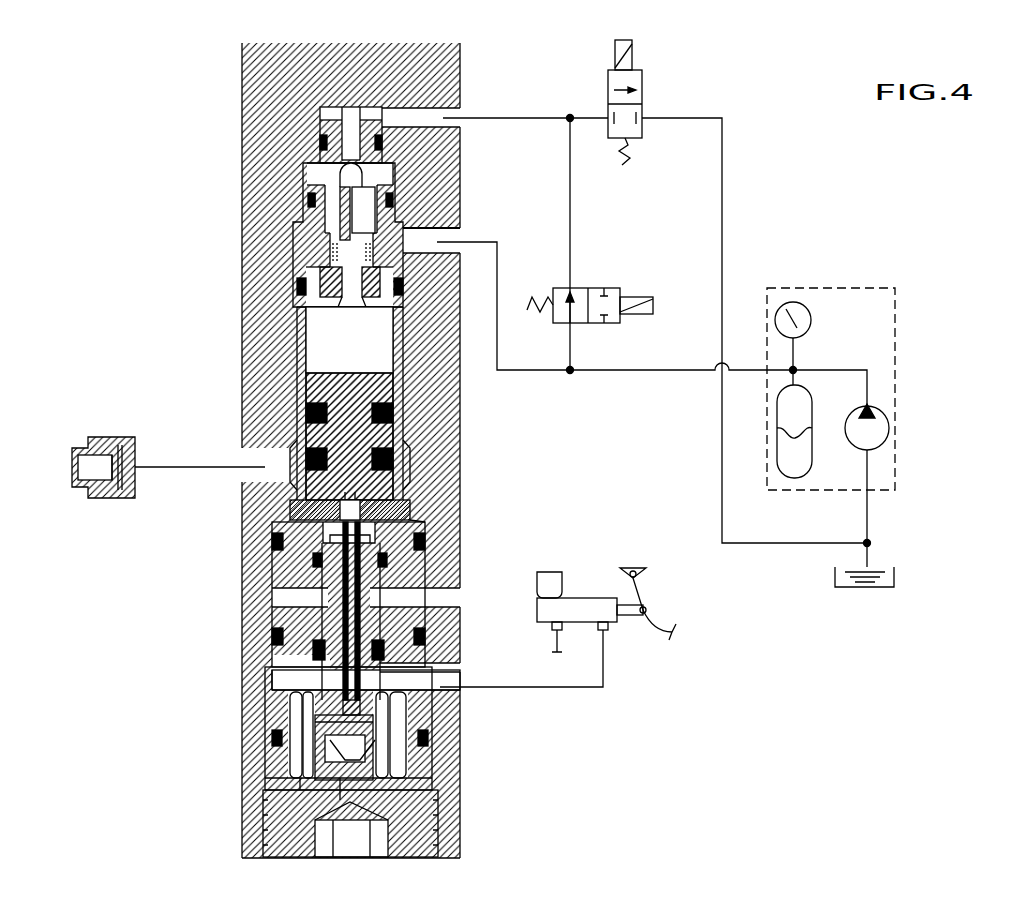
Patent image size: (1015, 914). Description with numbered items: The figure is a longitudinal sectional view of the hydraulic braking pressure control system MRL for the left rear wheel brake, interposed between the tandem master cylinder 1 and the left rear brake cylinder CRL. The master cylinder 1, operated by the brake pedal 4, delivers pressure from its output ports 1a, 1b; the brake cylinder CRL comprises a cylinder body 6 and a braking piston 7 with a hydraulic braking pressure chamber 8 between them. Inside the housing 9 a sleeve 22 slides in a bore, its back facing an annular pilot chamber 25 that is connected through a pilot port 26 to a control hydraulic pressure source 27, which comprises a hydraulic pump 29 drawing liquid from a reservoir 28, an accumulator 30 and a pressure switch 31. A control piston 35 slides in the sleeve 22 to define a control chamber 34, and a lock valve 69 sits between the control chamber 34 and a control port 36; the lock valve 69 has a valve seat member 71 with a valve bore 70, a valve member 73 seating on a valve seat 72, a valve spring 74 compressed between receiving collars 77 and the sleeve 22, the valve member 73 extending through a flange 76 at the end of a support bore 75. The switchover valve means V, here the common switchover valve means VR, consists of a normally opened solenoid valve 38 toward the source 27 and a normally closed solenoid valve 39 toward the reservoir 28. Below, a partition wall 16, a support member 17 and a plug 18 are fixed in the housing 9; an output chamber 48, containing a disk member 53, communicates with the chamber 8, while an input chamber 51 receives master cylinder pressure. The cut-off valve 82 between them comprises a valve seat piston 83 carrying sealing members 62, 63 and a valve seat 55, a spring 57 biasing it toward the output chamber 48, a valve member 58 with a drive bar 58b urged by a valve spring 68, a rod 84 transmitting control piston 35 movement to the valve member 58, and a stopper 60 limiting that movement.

The tandem type master cylinder 1 is at (572, 598).
The output port 1a is at (605, 631).
The output port 1b is at (552, 636).
The brake pedal 4 is at (675, 628).
The cylinder body 6 is at (100, 437).
The braking piston 7 is at (76, 446).
The hydraulic braking pressure chamber 8 is at (133, 450).
The housing 9 is at (464, 418).
The partition wall 16 is at (272, 560).
The support member 17 is at (272, 762).
The plug 18 is at (428, 830).
The sleeve 22 is at (405, 348).
The pilot chamber 25 is at (403, 270).
The pilot port 26 is at (446, 228).
The control hydraulic pressure source 27 is at (832, 288).
The reservoir 28 is at (894, 572).
The hydraulic pump 29 is at (859, 452).
The accumulator 30 is at (812, 436).
The pressure switch 31 is at (811, 319).
The control chamber 34 is at (362, 359).
The control piston 35 is at (359, 430).
The control port 36 is at (448, 113).
The normally opened solenoid valve 38 is at (618, 288).
The normally closed solenoid valve 39 is at (641, 139).
The output chamber 48 is at (292, 502).
The input chamber 51 is at (406, 762).
The disk member 53 is at (406, 494).
The valve seat 55 is at (380, 718).
The spring 57 is at (300, 780).
The valve member 58 is at (377, 722).
The drive bar 58b is at (300, 680).
The stopper 60 is at (349, 790).
The sealing member 62 is at (325, 580).
The sealing member 63 is at (442, 667).
The valve spring 68 is at (340, 778).
The lock valve 69 is at (323, 177).
The valve bore 70 is at (355, 118).
The valve seat member 71 is at (327, 132).
The valve seat 72 is at (380, 168).
The valve member 73 is at (363, 175).
The valve spring 74 is at (349, 321).
The support bore 75 is at (308, 214).
The flange 76 is at (365, 210).
The receiving collars 77 is at (398, 194).
The cut-off valve 82 is at (316, 703).
The valve seat piston 83 is at (320, 626).
The rod 84 is at (366, 628).
The switchover valve means V is at (432, 523).
The switchover valve means VR is at (670, 182).
The left rear brake cylinder CRL is at (117, 424).
The hydraulic braking pressure control system for left rear wheel brake MRL is at (475, 428).